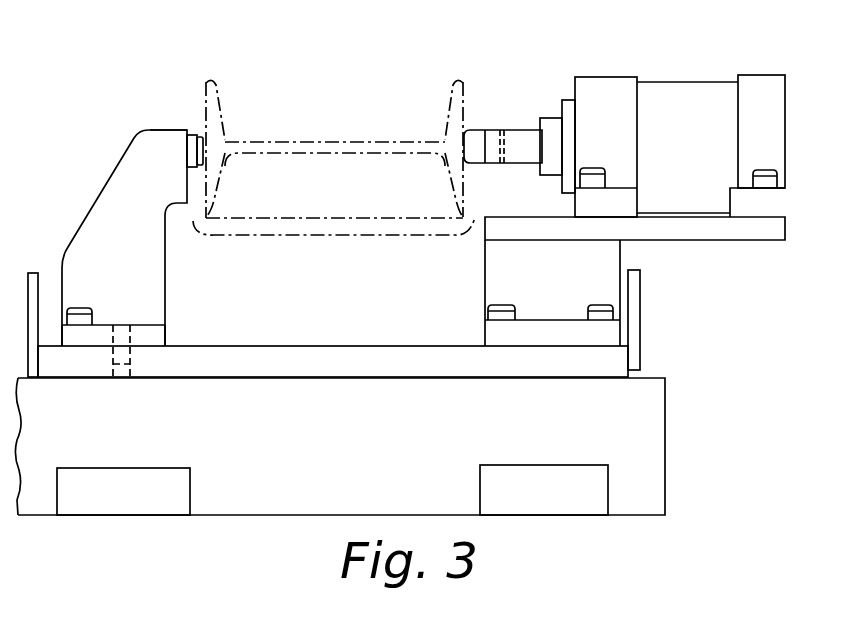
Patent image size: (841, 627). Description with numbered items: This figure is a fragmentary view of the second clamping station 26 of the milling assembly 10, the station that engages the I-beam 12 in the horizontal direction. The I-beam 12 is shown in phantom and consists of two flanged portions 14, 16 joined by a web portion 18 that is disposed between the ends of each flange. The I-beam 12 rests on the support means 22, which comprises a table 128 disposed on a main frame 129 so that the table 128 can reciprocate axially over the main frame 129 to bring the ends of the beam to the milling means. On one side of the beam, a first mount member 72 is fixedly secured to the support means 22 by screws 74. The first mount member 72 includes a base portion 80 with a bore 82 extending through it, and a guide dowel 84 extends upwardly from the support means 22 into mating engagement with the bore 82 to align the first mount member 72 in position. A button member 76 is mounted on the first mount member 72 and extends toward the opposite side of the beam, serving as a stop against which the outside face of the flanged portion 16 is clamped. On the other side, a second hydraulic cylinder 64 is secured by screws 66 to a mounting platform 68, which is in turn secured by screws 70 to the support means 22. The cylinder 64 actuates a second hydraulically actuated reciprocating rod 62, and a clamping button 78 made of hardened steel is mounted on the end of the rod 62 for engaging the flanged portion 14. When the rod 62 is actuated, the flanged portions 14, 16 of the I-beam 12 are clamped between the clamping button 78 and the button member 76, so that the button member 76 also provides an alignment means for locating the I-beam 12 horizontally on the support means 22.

The milling assembly 10 is at (517, 78).
The I-beam 12 is at (303, 142).
The flanged portion 14 is at (457, 91).
The flanged portion 16 is at (213, 94).
The web portion 18 is at (375, 142).
The support means 22 is at (665, 463).
The second clamping station 26 is at (143, 129).
The second hydraulically actuated reciprocating rod 62 is at (517, 128).
The second hydraulic cylinder 64 is at (685, 90).
The screws 66 is at (595, 167).
The mounting platform 68 is at (708, 223).
The screws 70 is at (510, 318).
The first mount member 72 is at (123, 180).
The screws 74 is at (88, 308).
The button member 76 is at (193, 148).
The clamping button 78 is at (478, 138).
The base portion 80 is at (160, 335).
The bore 82 is at (130, 366).
The guide dowel 84 is at (113, 366).
The table 128 is at (650, 392).
The main frame 129 is at (558, 492).